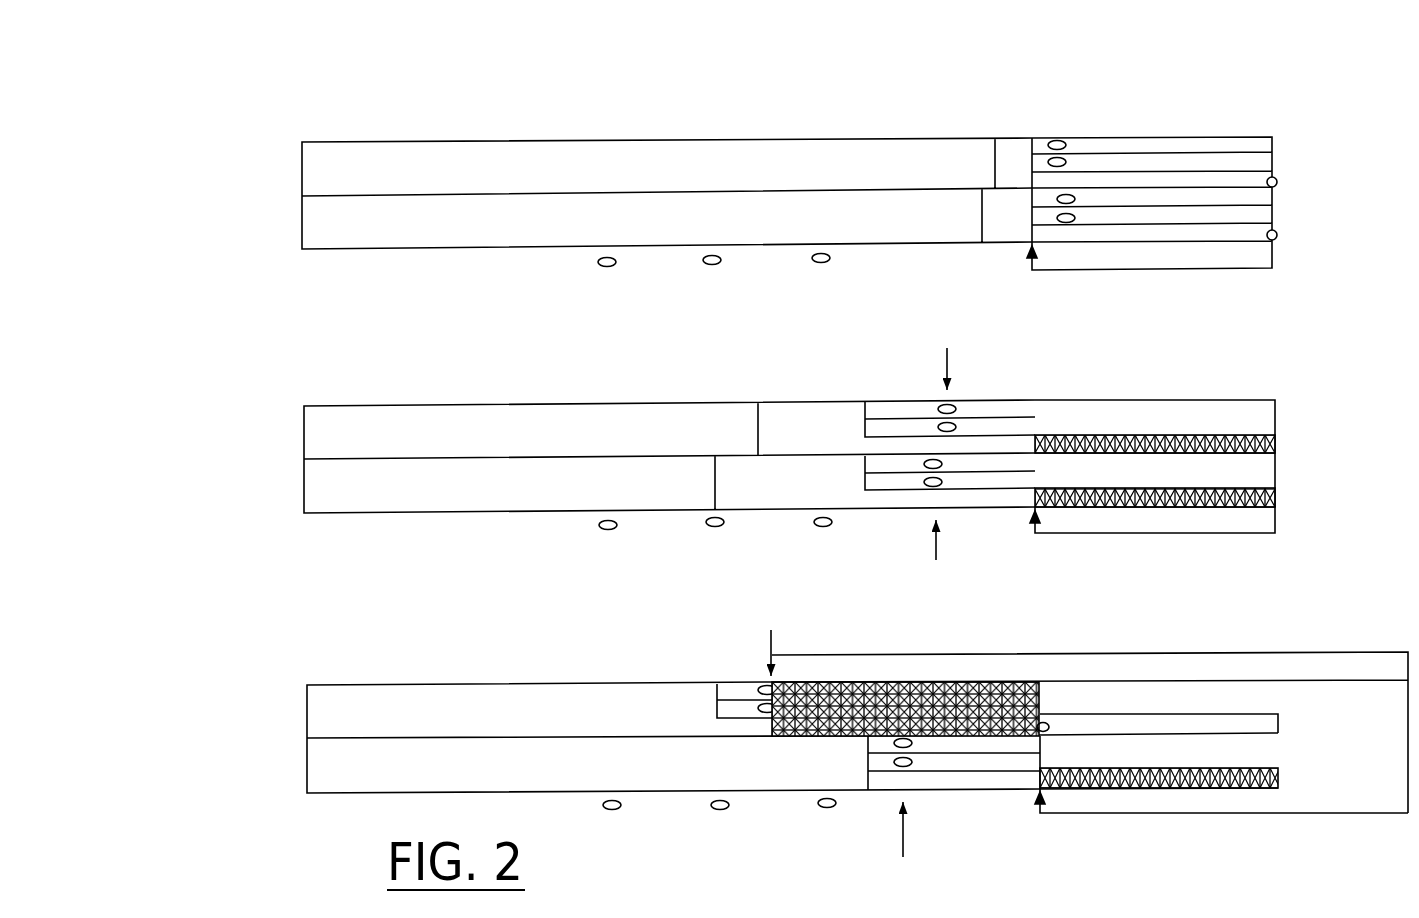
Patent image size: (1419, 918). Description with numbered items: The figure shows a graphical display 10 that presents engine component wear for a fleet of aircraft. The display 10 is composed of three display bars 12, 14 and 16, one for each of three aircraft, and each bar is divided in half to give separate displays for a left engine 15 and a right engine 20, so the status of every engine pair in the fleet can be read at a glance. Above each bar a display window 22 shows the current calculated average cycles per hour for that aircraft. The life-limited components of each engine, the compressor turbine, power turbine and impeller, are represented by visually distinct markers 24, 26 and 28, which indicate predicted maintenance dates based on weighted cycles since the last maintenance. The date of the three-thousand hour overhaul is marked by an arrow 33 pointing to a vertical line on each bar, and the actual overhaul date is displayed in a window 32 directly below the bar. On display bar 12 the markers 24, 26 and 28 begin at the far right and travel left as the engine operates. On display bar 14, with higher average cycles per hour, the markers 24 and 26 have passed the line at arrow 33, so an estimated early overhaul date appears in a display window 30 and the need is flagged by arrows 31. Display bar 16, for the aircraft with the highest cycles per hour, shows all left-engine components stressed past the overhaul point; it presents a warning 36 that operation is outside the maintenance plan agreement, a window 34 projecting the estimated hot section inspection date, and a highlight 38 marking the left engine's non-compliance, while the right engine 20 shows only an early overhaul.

The display 10 is at (1192, 114).
The display bar 12 is at (558, 131).
The display bar 14 is at (556, 396).
The left engine 15 is at (262, 152).
The display bar 16 is at (532, 676).
The right engine 20 is at (268, 255).
The display window 22 is at (899, 104).
The marker 24 is at (1050, 143).
The marker 26 is at (1050, 160).
The marker 28 is at (1278, 180).
The display window 30 is at (1180, 373).
The arrow 31 is at (949, 372).
The window 32 is at (1205, 270).
The arrow 33 is at (1018, 260).
The window 34 is at (914, 641).
The warning 36 is at (962, 650).
The highlight 38 is at (1048, 722).